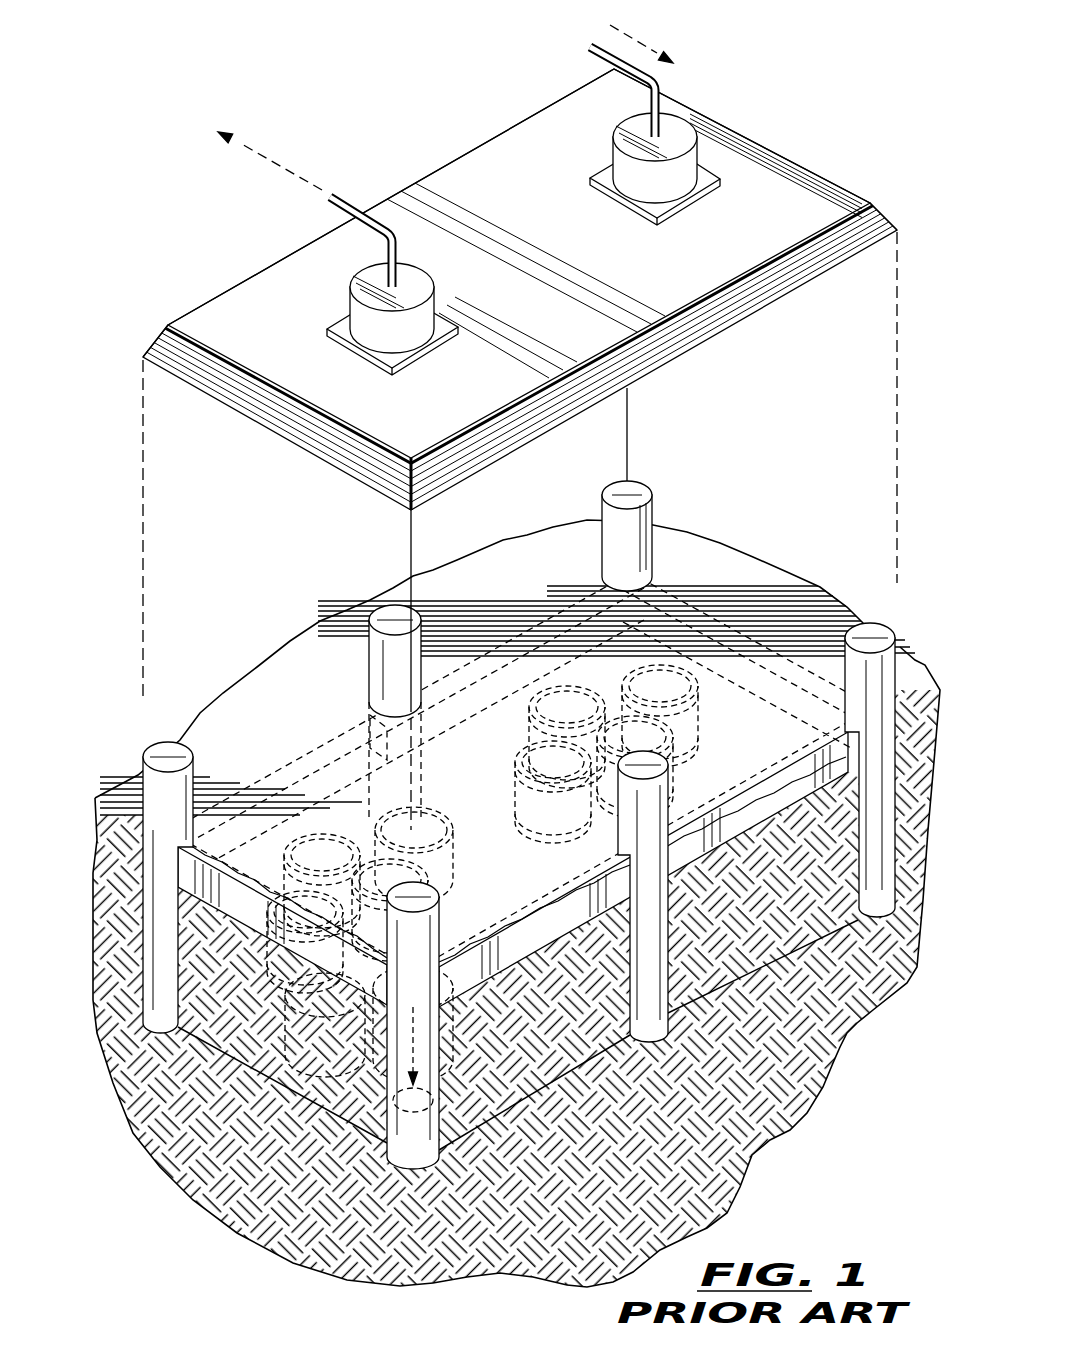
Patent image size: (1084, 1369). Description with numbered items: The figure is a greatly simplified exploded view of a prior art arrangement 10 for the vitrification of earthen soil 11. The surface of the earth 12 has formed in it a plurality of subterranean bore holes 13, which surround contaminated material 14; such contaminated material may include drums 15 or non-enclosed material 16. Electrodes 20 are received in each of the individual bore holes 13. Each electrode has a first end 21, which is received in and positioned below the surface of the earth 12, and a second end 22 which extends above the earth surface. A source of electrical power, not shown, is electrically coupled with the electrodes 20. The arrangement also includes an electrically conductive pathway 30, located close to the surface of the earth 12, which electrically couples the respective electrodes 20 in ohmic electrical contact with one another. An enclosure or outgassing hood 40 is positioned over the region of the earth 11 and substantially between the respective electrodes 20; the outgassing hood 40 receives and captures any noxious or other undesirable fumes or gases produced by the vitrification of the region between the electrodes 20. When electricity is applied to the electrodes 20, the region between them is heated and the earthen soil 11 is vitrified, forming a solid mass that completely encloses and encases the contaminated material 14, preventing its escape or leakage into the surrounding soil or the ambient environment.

The prior art arrangement 10 is at (823, 133).
The earthen soil 11 is at (862, 935).
The surface of the earth 12 is at (710, 547).
The subterranean bore holes 13 is at (177, 770).
The contaminated material 14 is at (443, 817).
The drums 15 is at (328, 830).
The non-enclosed material 16 is at (433, 1040).
The electrodes 20 is at (377, 650).
The first end 21 is at (137, 1043).
The second end 22 is at (162, 745).
The electrically conductive pathway 30 is at (357, 733).
The outgassing hood 40 is at (548, 190).